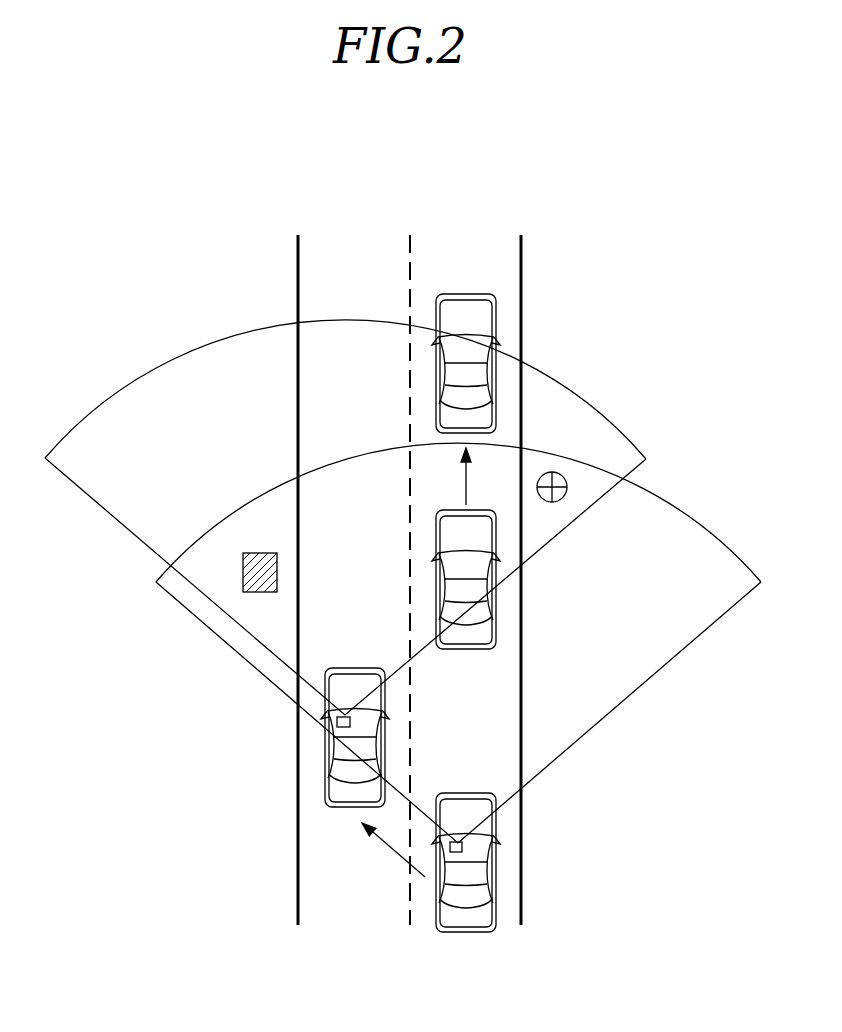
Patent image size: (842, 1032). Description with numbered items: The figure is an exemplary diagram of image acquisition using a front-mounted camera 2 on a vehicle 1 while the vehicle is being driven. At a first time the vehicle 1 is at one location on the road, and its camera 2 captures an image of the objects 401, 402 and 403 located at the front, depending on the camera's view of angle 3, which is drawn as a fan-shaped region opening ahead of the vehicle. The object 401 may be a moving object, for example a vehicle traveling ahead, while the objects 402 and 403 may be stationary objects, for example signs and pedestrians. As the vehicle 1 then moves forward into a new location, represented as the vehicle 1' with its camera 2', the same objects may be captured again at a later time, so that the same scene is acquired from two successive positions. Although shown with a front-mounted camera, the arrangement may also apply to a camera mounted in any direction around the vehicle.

The vehicle 1 is at (494, 893).
The front-mounted camera 2 is at (511, 874).
The vehicle at later location 1' is at (311, 739).
The front-mounted camera at later location 2' is at (402, 721).
The view of angle 3 is at (645, 682).
The moving object 401 is at (495, 603).
The stationary object 402 is at (260, 592).
The stationary object 403 is at (562, 497).